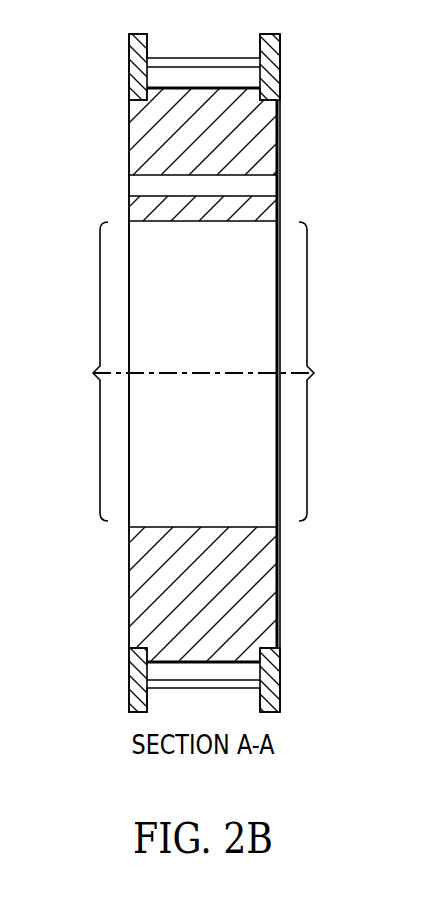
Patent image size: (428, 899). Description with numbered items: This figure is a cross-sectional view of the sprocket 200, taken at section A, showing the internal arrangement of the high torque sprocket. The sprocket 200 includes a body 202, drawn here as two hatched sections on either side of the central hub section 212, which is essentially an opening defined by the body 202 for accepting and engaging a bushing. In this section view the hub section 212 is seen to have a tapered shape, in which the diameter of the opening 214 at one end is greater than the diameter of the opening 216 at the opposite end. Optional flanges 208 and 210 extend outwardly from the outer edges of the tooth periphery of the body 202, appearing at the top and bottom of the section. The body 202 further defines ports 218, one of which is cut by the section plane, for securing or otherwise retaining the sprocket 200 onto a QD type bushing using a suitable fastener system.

The sprocket 200 is at (347, 72).
The body 202 is at (133, 137).
The flange 208 is at (273, 679).
The flange 210 is at (134, 702).
The hub section 212 is at (222, 309).
The opening 214 is at (329, 371).
The opening 216 is at (184, 371).
The ports 218 is at (133, 186).